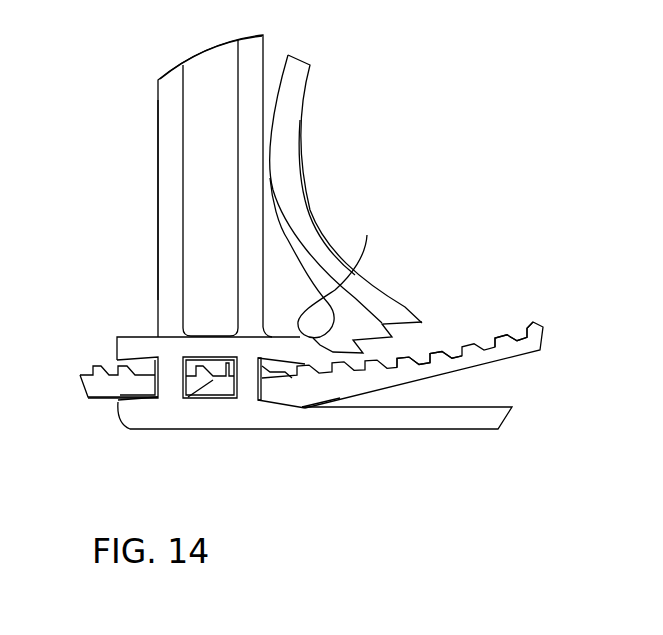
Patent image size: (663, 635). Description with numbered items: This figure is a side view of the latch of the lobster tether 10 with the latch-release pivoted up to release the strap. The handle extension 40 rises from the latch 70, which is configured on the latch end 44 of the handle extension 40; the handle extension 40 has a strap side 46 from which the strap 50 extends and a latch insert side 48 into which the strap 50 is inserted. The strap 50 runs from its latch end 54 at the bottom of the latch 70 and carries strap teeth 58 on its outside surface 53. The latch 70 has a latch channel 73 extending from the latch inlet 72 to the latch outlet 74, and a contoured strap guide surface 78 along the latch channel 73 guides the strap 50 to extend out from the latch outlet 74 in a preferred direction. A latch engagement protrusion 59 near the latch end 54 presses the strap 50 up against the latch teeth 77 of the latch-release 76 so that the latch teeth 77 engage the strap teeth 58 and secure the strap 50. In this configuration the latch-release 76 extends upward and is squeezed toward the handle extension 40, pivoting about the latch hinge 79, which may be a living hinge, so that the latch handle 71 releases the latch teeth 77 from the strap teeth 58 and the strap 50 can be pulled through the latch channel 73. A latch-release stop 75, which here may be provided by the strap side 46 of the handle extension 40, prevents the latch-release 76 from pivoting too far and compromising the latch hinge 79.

The lobster tether 10 is at (118, 118).
The handle extension 40 is at (158, 169).
The latch end 44 is at (158, 331).
The strap side 46 is at (265, 43).
The latch insert side 48 is at (158, 202).
The strap 50 is at (542, 328).
The outside surface 53 is at (483, 343).
The latch end 54 is at (398, 413).
The strap teeth 58 is at (407, 358).
The latch engagement protrusion 59 is at (357, 400).
The latch 70 is at (160, 398).
The latch handle 71 is at (283, 163).
The latch inlet 72 is at (125, 378).
The latch channel 73 is at (190, 396).
The latch outlet 74 is at (290, 380).
The latch-release stop 75 is at (262, 127).
The latch-release 76 is at (333, 177).
The latch teeth 77 is at (380, 323).
The strap guide surface 78 is at (212, 398).
The latch hinge 79 is at (367, 235).